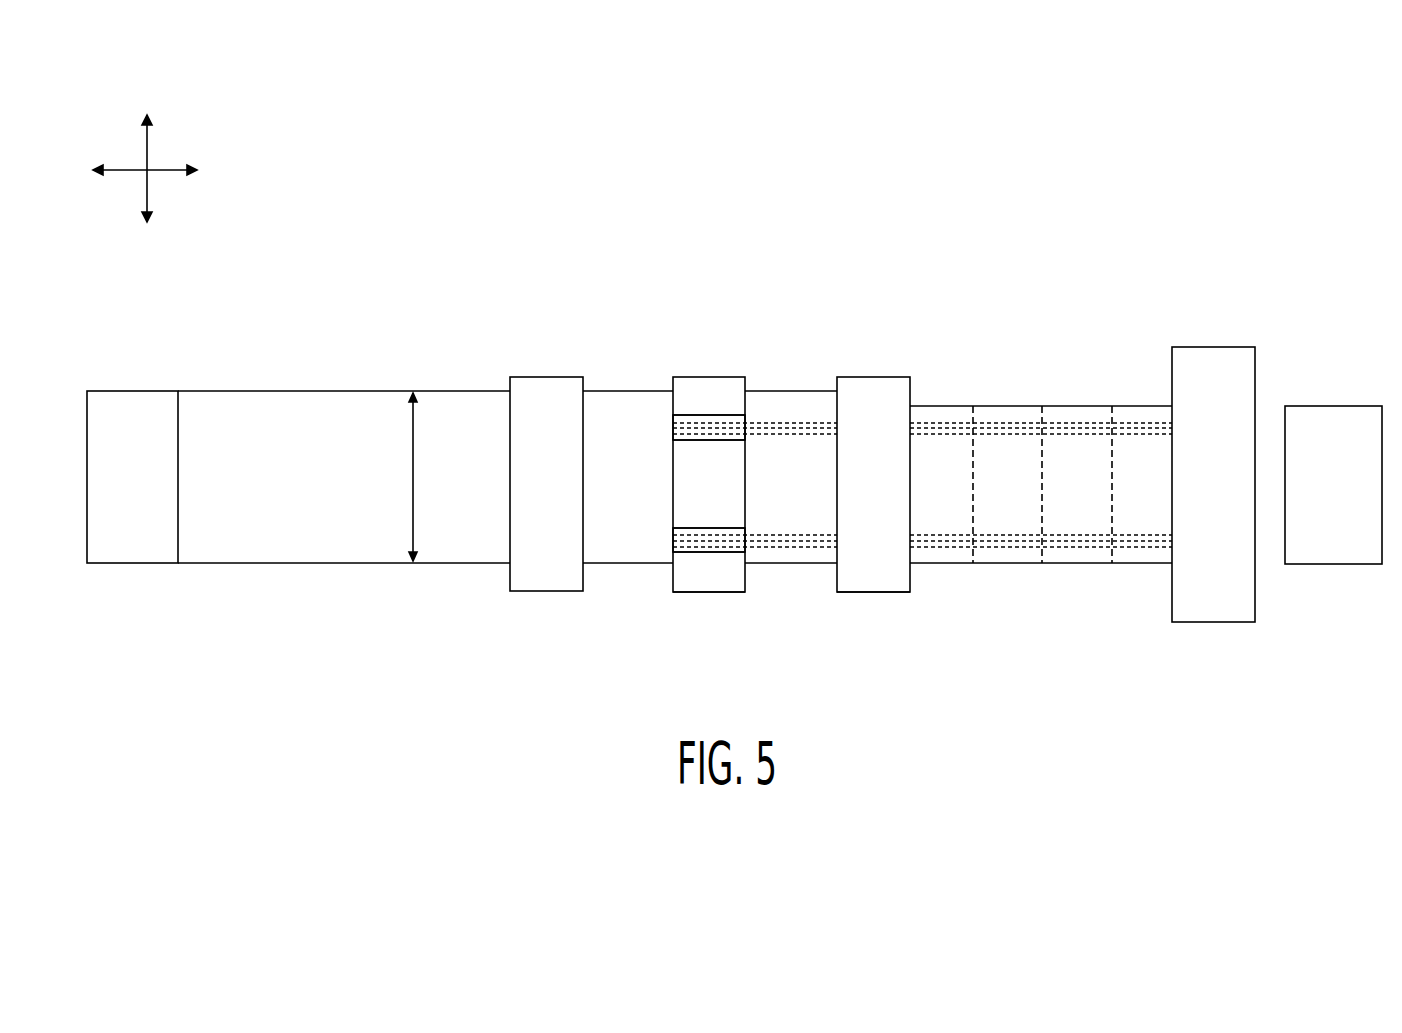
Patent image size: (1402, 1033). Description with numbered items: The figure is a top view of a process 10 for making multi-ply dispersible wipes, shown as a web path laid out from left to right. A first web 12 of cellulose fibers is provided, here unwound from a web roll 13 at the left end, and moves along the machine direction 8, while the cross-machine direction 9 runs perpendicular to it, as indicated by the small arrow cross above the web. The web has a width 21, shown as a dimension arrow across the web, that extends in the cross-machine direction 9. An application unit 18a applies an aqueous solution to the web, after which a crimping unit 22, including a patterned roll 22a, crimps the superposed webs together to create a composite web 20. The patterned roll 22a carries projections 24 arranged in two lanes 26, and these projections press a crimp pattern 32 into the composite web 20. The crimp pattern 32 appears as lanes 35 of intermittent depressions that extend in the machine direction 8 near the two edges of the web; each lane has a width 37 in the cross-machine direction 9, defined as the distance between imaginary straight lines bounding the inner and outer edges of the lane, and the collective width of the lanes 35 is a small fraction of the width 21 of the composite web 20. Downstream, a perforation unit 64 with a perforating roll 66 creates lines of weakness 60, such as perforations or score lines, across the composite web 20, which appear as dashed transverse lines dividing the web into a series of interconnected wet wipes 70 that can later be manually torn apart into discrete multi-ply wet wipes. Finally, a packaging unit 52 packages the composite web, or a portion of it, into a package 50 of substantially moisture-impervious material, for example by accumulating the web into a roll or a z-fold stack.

The machine direction 8 is at (165, 170).
The cross-machine direction 9 is at (147, 190).
The process 10 is at (427, 352).
The first web 12 is at (273, 391).
The web roll 13 is at (127, 391).
The application unit 18a is at (545, 377).
The composite web 20 is at (785, 391).
The width 21 is at (413, 483).
The crimping unit 22 is at (716, 360).
The patterned roll 22a is at (705, 592).
The projections 24 is at (675, 432).
The lanes of projections 26 is at (707, 440).
The crimp pattern 32 is at (945, 435).
The lanes of intermittent depressions 35 is at (790, 435).
The lane width 37 is at (672, 527).
The package 50 is at (1345, 406).
The packaging unit 52 is at (1220, 347).
The lines of weakness 60 is at (1112, 500).
The perforation unit 64 is at (888, 362).
The perforating roll 66 is at (877, 592).
The interconnected wet wipes 70 is at (1143, 406).